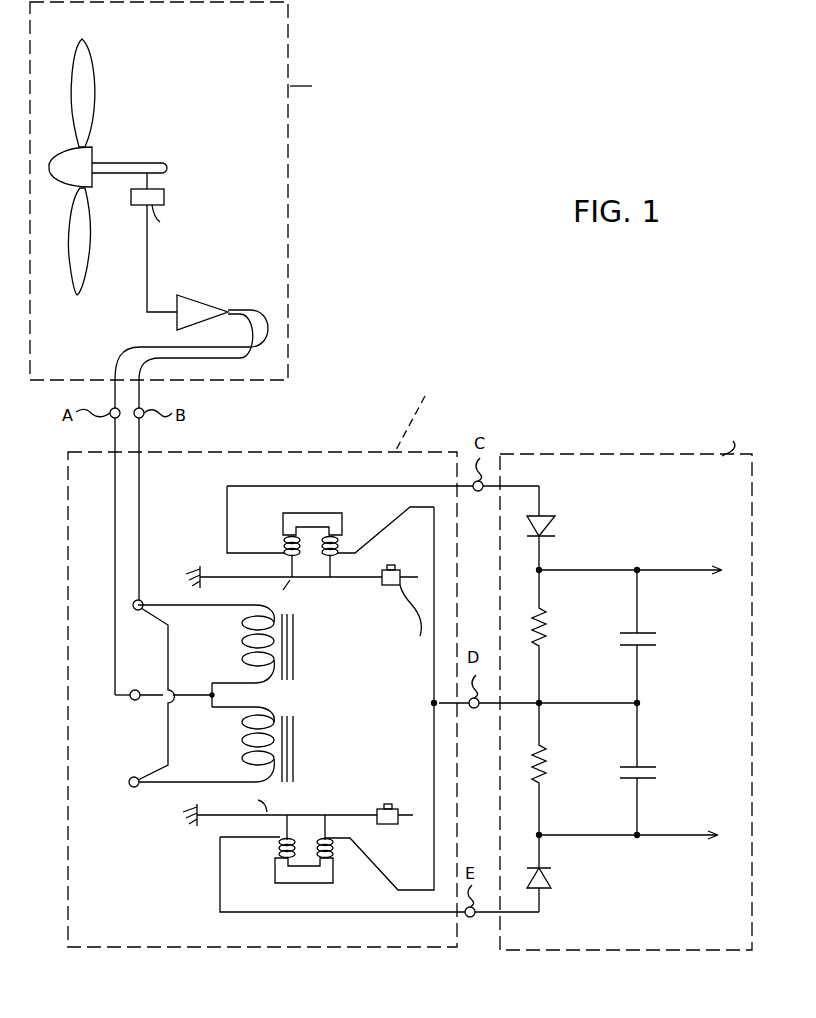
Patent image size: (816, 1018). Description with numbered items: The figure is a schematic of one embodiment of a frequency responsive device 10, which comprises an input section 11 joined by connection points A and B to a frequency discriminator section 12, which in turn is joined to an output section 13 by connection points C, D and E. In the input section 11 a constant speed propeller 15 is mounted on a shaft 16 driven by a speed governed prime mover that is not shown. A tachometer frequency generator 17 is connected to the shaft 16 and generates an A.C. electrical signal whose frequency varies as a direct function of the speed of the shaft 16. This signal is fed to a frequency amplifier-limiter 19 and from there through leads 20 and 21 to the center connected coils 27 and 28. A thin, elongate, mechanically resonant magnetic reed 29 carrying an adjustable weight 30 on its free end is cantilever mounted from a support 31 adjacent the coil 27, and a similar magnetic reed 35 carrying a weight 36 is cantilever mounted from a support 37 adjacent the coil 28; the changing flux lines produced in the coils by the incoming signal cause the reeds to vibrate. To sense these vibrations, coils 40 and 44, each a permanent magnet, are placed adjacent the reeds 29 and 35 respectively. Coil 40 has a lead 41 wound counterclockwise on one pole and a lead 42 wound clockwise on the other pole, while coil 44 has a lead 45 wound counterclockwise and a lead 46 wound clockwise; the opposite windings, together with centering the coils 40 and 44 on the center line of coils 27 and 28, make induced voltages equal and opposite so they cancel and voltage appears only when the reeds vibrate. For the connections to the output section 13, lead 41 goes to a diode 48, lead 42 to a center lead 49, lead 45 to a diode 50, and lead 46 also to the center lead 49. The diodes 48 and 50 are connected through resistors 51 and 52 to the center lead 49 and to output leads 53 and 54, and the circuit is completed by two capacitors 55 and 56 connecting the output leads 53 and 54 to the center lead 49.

The frequency responsive device 10 is at (426, 228).
The input section 11 is at (290, 42).
The frequency discriminator section 12 is at (352, 450).
The output section 13 is at (620, 452).
The constant speed propeller 15 is at (95, 76).
The shaft 16 is at (124, 162).
The tachometer frequency generator 17 is at (165, 195).
The frequency amplifier-limiter 19 is at (197, 296).
The lead 20 is at (114, 502).
The lead 21 is at (141, 496).
The coil 27 is at (296, 655).
The coil 28 is at (296, 724).
The magnetic reed 29 is at (348, 580).
The weight 30 is at (393, 587).
The support 31 is at (200, 571).
The magnetic reed 35 is at (337, 812).
The weight 36 is at (388, 804).
The support 37 is at (192, 815).
The coil 40 is at (283, 520).
The lead 41 is at (226, 520).
The lead 42 is at (375, 544).
The coil 44 is at (274, 872).
The lead 45 is at (219, 870).
The lead 46 is at (358, 844).
The diode 48 is at (557, 520).
The center lead 49 is at (514, 700).
The diode 50 is at (552, 882).
The resistor 51 is at (546, 613).
The resistor 52 is at (545, 745).
The output lead 53 is at (672, 567).
The output lead 54 is at (667, 837).
The capacitor 55 is at (657, 630).
The capacitor 56 is at (657, 765).